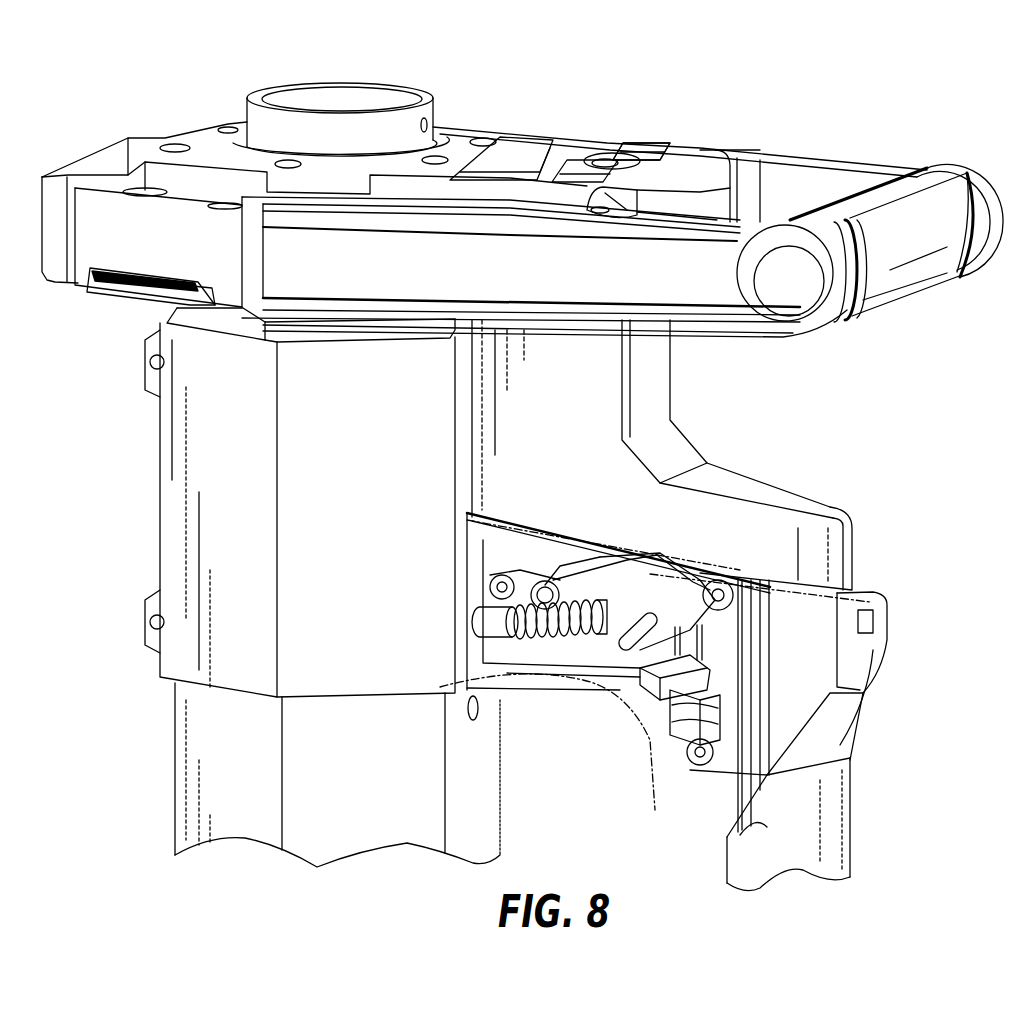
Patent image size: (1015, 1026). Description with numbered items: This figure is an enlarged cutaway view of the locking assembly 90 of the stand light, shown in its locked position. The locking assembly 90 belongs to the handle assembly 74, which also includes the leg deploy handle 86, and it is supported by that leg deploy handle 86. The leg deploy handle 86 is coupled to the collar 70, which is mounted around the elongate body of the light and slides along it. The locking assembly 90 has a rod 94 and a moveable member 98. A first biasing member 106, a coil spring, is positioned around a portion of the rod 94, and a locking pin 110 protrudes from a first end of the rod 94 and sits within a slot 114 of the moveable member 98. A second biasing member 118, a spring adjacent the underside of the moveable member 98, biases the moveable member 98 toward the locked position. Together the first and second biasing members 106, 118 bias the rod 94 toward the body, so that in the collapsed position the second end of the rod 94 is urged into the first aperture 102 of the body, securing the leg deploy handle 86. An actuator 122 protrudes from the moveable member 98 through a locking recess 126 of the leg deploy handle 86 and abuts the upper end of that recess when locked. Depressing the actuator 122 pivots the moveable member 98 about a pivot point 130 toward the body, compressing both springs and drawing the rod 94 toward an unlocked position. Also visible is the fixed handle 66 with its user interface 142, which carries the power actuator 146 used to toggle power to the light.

The handle assembly 74 is at (633, 86).
The power actuator 146 is at (600, 140).
The user interface 142 is at (654, 132).
The fixed handle 66 is at (933, 207).
The collar 70 is at (227, 540).
The locking assembly 90 is at (921, 458).
The moveable member 98 is at (640, 588).
The pivot point 130 is at (537, 580).
The rod 94 is at (470, 620).
The first biasing member 106 is at (563, 640).
The locking pin 110 is at (625, 640).
The slot 114 is at (660, 688).
The actuator 122 is at (648, 652).
The second biasing member 118 is at (712, 750).
The locking recess 126 is at (658, 770).
The first aperture 102 is at (465, 708).
The leg deploy handle 86 is at (887, 667).